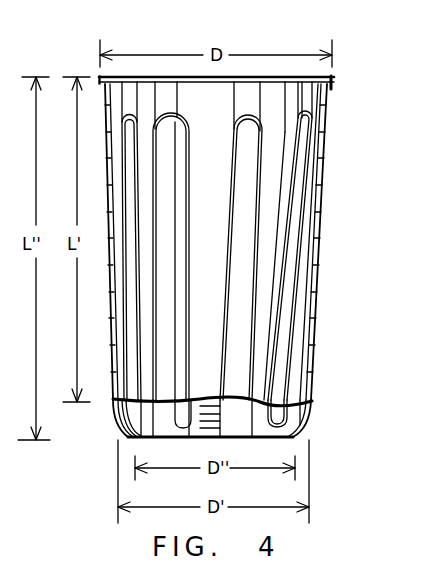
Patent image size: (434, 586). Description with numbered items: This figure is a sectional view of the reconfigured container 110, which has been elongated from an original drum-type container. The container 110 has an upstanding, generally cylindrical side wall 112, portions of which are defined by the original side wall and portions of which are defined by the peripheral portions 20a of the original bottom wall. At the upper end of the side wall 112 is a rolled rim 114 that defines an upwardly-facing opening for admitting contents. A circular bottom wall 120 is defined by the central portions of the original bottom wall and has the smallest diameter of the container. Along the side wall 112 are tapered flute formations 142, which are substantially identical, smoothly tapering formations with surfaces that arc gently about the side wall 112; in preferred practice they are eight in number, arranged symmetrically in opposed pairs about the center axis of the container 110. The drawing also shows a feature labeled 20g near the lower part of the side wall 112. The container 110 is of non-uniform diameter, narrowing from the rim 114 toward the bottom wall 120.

The container 110 is at (349, 104).
The rolled rim 114 is at (133, 77).
The side wall 112 is at (314, 195).
The tapered flute formations 142 is at (309, 254).
The groove band 20g is at (312, 403).
The peripheral portions of the bottom wall 20a is at (305, 433).
The circular bottom wall 120 is at (229, 450).